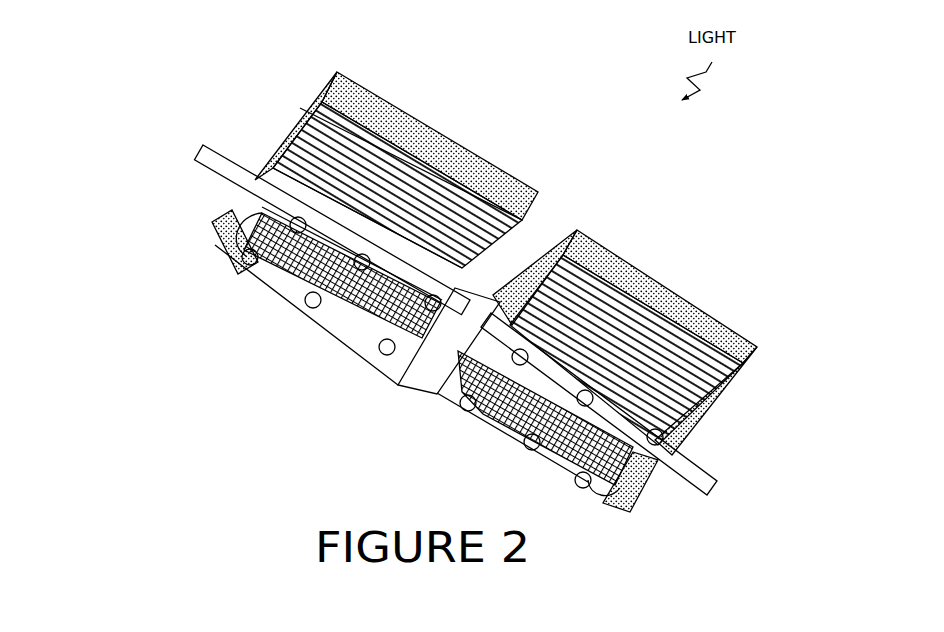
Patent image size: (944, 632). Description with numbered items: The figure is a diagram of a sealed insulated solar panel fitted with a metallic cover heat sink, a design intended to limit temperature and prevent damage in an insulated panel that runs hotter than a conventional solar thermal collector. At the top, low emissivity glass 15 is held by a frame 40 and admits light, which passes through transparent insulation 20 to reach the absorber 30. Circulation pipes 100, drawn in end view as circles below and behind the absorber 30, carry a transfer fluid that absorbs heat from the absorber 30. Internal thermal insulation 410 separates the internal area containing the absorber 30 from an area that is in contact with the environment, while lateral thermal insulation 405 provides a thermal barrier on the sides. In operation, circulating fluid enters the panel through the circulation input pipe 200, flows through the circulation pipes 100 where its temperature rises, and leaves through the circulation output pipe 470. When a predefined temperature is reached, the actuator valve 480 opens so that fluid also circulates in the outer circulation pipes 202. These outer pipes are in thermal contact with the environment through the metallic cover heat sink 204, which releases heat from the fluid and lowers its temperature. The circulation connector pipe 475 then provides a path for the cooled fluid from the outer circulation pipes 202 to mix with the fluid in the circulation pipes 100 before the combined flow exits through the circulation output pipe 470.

The low emissivity glass 15 is at (335, 107).
The frame 40 is at (295, 107).
The transparent insulation 20 is at (425, 184).
The lateral thermal insulation 405 is at (310, 167).
The circulation output pipe 470 is at (262, 179).
The absorber 30 is at (345, 228).
The circulation connector pipe 475 is at (215, 245).
The internal thermal insulation 410 is at (300, 280).
The actuator valve 480 is at (372, 352).
The outer circulation pipes 202 is at (585, 485).
The circulation pipes 100 is at (640, 430).
The circulation input pipe 200 is at (680, 478).
The metallic cover heat sink 204 is at (594, 502).